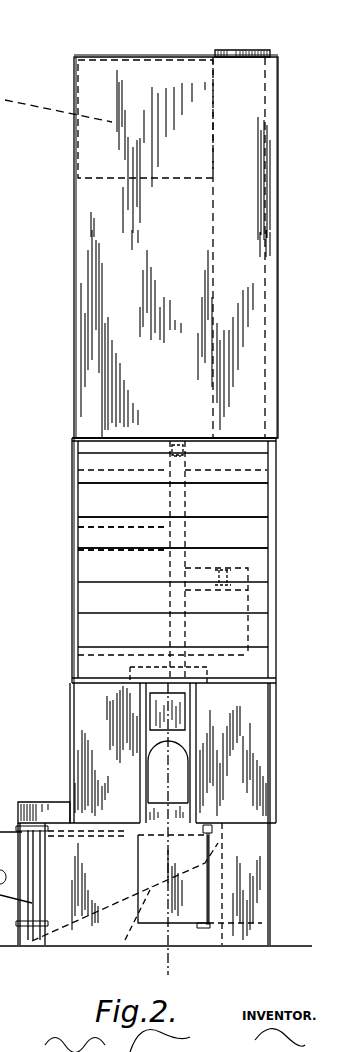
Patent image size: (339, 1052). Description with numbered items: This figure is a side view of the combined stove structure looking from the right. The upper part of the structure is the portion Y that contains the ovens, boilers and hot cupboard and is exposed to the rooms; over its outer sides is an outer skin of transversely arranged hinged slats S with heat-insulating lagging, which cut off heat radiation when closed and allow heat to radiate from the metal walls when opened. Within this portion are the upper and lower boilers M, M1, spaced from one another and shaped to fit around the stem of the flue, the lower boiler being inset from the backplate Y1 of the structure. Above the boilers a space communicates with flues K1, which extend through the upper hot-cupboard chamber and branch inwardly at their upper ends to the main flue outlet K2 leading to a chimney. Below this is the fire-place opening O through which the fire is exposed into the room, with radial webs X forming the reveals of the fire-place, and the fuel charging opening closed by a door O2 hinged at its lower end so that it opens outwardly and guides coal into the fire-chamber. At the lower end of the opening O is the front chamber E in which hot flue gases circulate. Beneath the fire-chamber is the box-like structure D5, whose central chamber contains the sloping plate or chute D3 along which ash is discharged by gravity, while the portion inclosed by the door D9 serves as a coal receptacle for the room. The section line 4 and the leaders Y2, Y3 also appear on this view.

The flue K1 is at (235, 166).
The main flue outlet K2 is at (255, 51).
The hinged slat S is at (250, 463).
The backplate Y1 is at (272, 510).
The upper boiler M is at (232, 522).
The lower boiler M1 is at (218, 630).
The door O2 is at (177, 720).
The fire-place opening O is at (172, 790).
The radial web X is at (105, 725).
The front chamber E is at (55, 812).
The door D9 is at (180, 856).
The box-like structure D5 is at (232, 890).
The sloping plate or chute D3 is at (128, 947).
The section line 4 is at (174, 662).
The upper structure portion Y is at (88, 437).
The lever Y2 is at (108, 498).
The lever Y3 is at (100, 593).